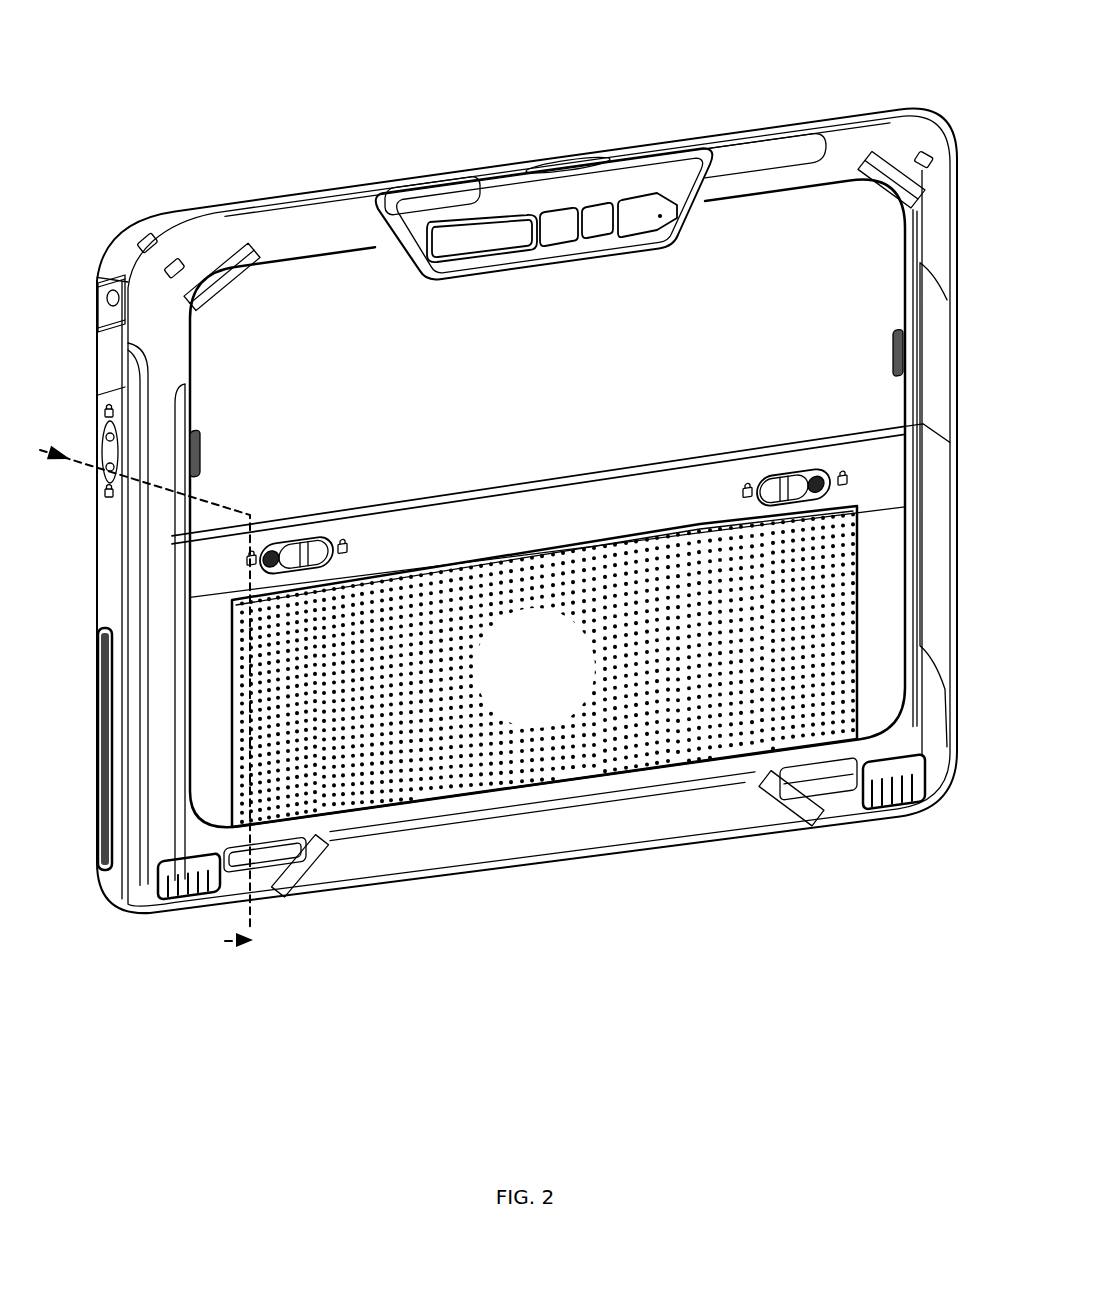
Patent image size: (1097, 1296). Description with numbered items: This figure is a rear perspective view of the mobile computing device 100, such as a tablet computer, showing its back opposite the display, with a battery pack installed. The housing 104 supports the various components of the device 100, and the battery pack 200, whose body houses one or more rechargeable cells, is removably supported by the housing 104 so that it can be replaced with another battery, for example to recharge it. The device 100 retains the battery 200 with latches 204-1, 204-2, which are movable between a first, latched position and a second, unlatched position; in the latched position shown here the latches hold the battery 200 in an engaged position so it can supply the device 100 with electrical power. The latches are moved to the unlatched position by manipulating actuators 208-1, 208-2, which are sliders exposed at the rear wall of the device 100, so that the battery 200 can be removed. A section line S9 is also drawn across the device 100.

The mobile computing device 100 is at (363, 92).
The housing 104 is at (748, 140).
The battery pack 200 is at (505, 790).
The latch 204-1 is at (336, 520).
The latch 204-2 is at (809, 449).
The actuator 208-1 is at (293, 553).
The actuator 208-2 is at (770, 478).
The section line S9 is at (241, 944).